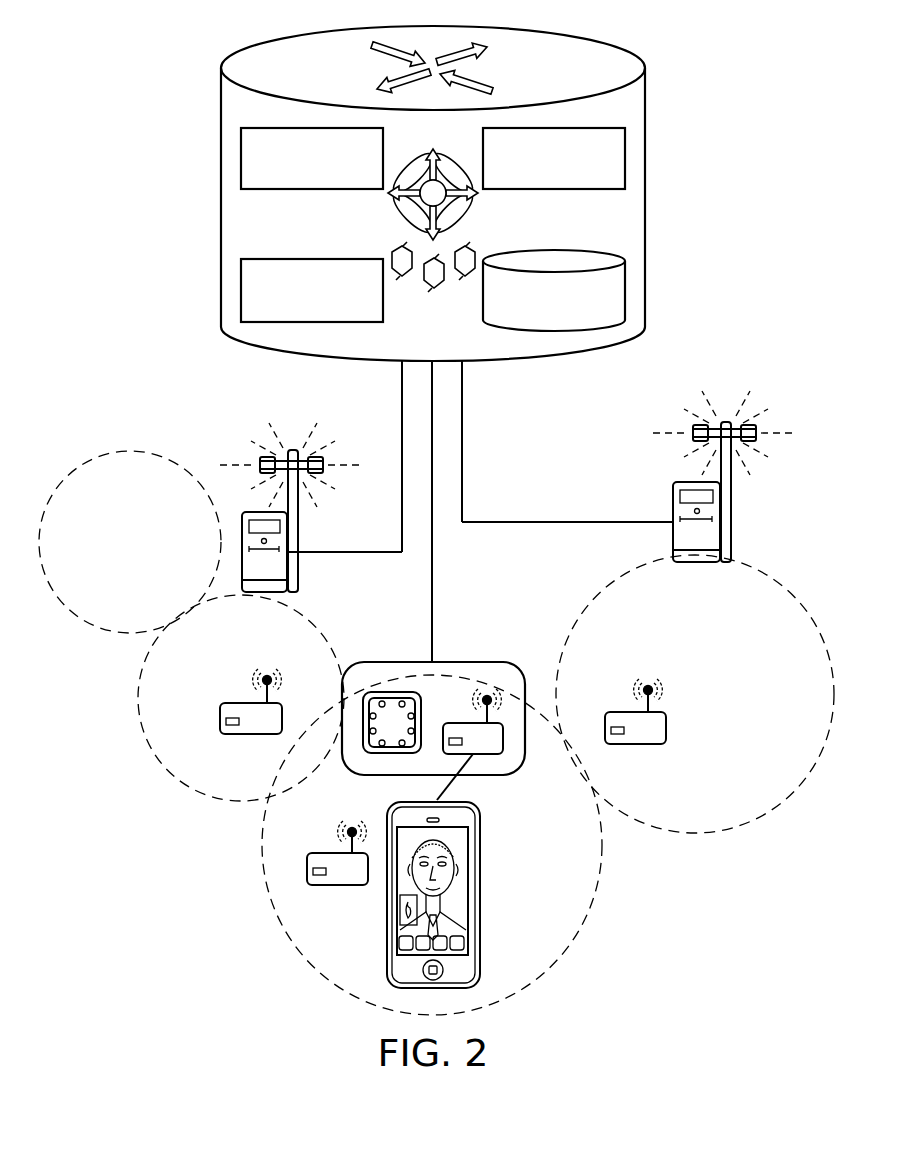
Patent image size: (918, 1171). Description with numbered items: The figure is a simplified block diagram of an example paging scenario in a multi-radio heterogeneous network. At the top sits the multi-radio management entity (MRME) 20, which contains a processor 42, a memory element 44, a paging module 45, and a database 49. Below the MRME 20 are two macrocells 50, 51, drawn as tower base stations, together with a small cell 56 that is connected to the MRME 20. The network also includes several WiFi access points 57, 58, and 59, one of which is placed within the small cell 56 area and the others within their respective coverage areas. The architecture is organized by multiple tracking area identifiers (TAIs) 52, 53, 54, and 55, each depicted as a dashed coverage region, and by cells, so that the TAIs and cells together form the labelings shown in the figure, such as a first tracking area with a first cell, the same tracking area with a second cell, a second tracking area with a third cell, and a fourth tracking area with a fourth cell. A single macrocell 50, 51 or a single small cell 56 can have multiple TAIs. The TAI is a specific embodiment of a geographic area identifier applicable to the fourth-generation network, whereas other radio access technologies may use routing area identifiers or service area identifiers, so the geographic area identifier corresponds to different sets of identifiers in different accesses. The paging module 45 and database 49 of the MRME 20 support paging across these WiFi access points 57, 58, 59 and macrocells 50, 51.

The multi-radio management entity (MRME) 20 is at (216, 107).
The processor 42 is at (290, 190).
The memory element 44 is at (531, 190).
The paging module 45 is at (331, 259).
The database 49 is at (575, 250).
The macrocell 50 is at (292, 450).
The macrocell 51 is at (725, 422).
The tracking area identifier (TAI) 52 is at (124, 451).
The tracking area identifier (TAI) 53 is at (208, 800).
The tracking area identifier (TAI) 54 is at (705, 834).
The tracking area identifier (TAI) 55 is at (597, 893).
The small cell 56 is at (402, 662).
The WiFi access point 57 is at (634, 746).
The WiFi access point 58 is at (250, 735).
The WiFi access point 59 is at (337, 887).